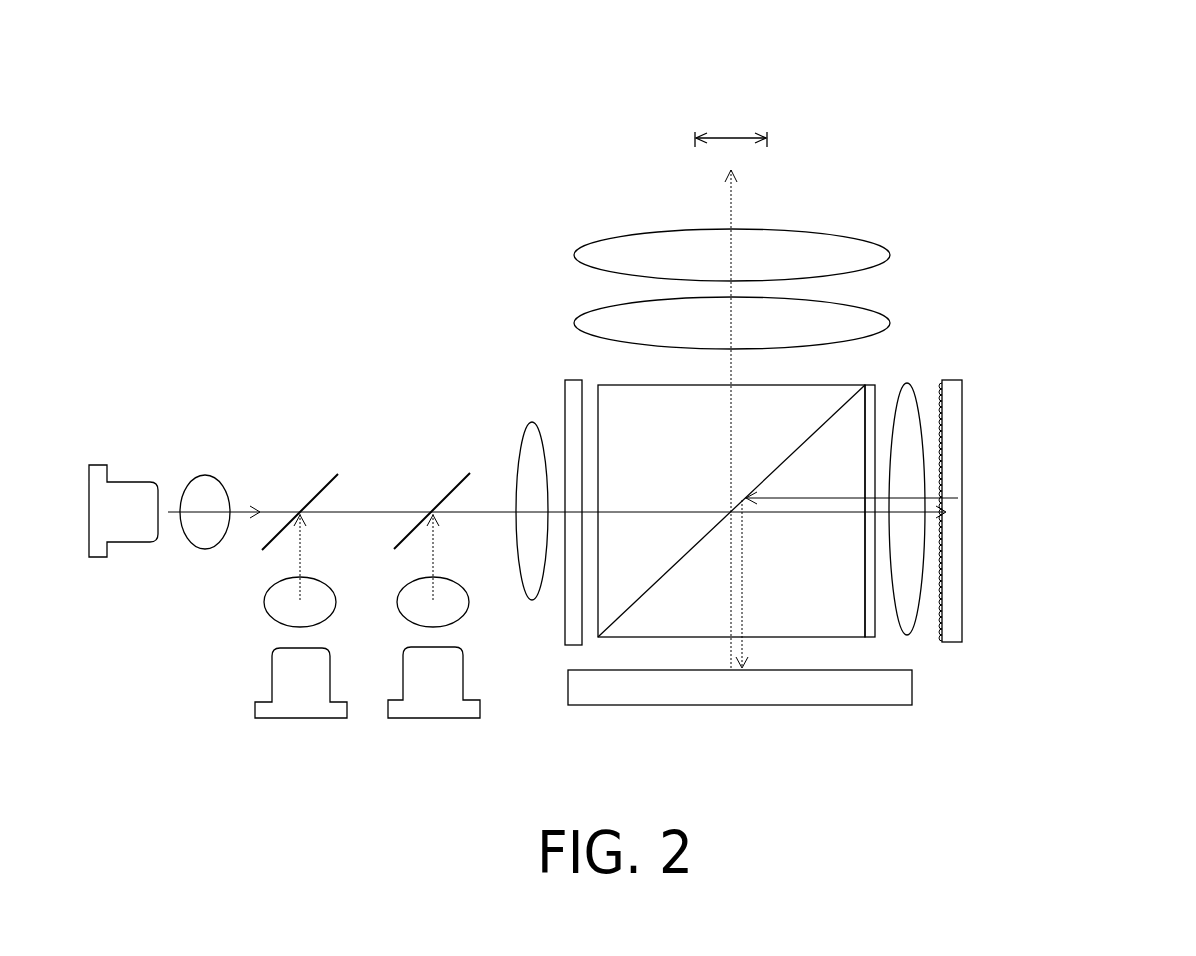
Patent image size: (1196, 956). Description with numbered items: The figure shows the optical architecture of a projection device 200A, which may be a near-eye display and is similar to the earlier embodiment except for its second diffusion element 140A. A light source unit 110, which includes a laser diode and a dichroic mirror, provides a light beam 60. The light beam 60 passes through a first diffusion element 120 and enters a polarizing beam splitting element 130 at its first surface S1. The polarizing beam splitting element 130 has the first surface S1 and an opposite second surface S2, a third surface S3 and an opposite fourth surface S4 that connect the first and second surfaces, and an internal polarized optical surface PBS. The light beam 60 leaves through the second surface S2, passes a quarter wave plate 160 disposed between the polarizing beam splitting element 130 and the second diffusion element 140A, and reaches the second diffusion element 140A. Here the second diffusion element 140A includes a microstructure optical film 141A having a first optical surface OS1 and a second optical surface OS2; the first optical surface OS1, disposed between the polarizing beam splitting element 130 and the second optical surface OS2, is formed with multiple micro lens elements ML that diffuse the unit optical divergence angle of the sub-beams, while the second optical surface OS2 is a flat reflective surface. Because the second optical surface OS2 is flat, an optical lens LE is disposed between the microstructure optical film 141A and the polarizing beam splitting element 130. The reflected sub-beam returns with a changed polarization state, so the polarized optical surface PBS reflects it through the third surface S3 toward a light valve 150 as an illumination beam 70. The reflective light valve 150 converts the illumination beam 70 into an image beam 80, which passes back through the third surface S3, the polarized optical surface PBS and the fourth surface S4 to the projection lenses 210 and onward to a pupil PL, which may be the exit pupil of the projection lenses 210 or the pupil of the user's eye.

The projection device 200A is at (1180, 759).
The light source unit 110 is at (280, 428).
The light beam 60 is at (496, 510).
The illumination beam 70 is at (822, 497).
The image beam 80 is at (730, 440).
The pupil PL is at (745, 102).
The projection lenses 210 is at (590, 320).
The polarizing beam splitting element 130 is at (600, 367).
The polarized optical surface PBS is at (786, 456).
The first surface S1 is at (595, 600).
The second surface S2 is at (870, 628).
The third surface S3 is at (800, 642).
The fourth surface S4 is at (644, 382).
The first diffusion element 120 is at (565, 613).
The quarter wave plate 160 is at (870, 385).
The light valve 150 is at (862, 690).
The second diffusion element 140A is at (1000, 299).
The optical lens LE is at (906, 380).
The microstructure optical film 141A is at (986, 485).
The micro lens elements ML is at (940, 488).
The first optical surface OS1 is at (936, 616).
The second optical surface OS2 is at (964, 602).